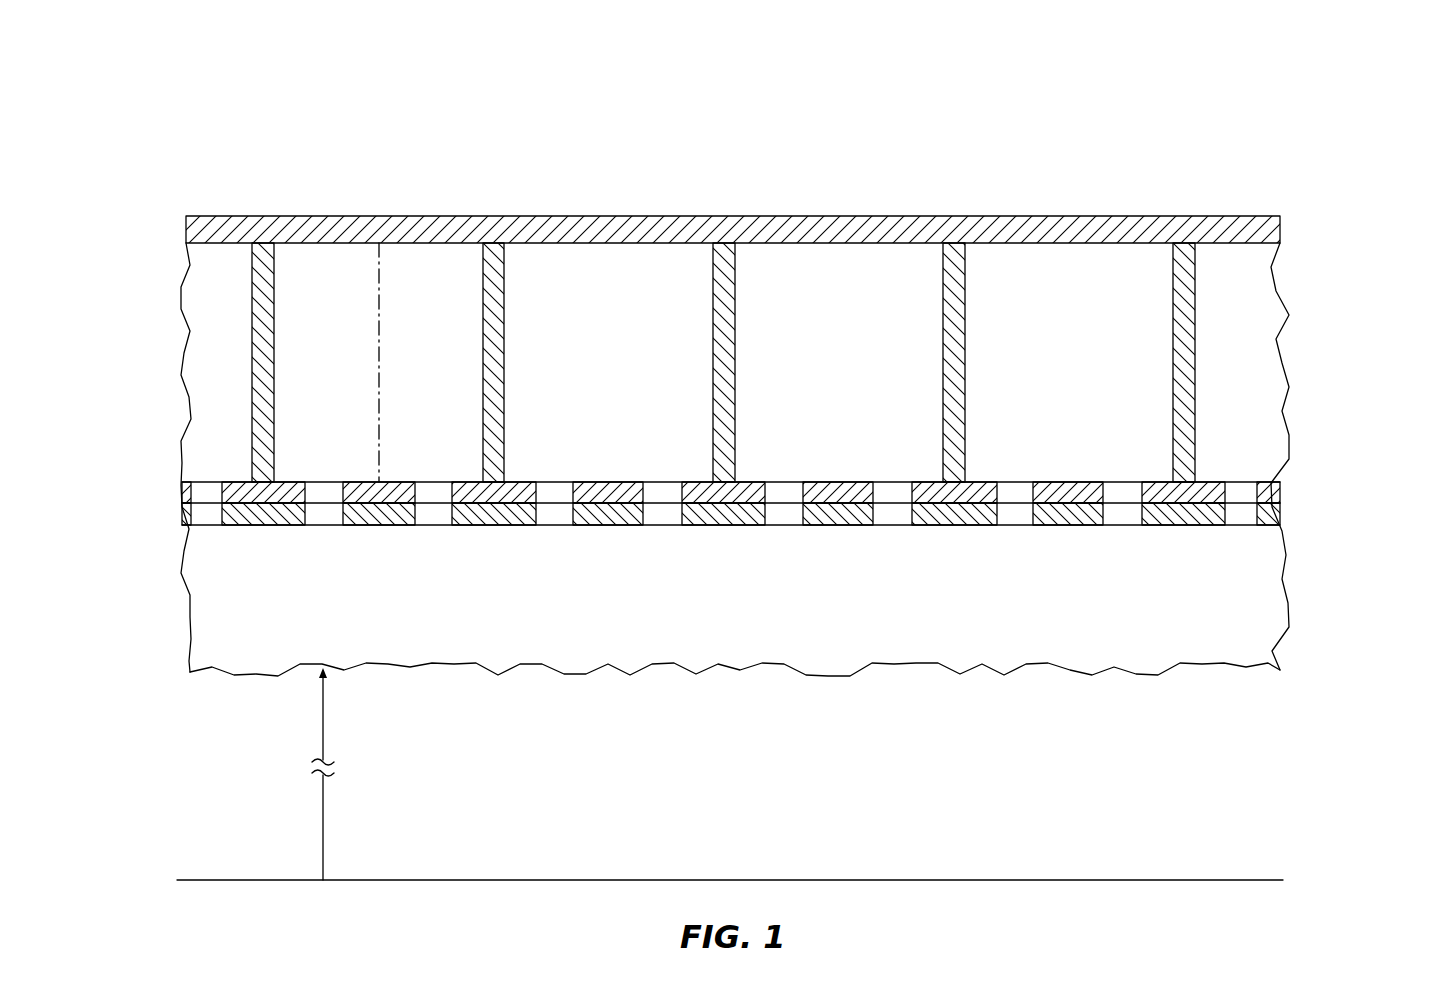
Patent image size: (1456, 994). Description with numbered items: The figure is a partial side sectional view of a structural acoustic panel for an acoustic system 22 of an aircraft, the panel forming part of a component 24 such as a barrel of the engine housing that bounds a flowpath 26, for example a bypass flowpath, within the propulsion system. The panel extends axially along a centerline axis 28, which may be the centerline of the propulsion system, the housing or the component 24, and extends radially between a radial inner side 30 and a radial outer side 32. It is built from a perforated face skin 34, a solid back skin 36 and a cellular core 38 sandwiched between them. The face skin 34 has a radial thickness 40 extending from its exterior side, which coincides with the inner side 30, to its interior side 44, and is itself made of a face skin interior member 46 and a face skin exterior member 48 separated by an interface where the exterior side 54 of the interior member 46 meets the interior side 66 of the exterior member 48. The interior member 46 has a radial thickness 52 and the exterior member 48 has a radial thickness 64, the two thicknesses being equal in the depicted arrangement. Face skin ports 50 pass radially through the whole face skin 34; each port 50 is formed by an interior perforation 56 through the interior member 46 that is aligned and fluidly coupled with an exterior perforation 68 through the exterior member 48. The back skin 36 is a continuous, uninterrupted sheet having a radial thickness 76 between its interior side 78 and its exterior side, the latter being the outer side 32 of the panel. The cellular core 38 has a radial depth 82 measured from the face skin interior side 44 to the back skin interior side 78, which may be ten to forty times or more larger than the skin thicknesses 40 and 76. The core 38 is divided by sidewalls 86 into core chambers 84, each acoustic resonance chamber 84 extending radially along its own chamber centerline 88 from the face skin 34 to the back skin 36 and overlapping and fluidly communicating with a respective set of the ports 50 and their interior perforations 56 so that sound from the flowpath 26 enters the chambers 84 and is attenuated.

The acoustic system 22 is at (158, 63).
The component 24 is at (158, 129).
The flowpath 26 is at (737, 631).
The centerline axis 28 is at (208, 880).
The radial inner side 30 is at (258, 526).
The radial outer side 32 is at (263, 216).
The perforated face skin 34 is at (152, 484).
The back skin 36 is at (170, 228).
The cellular core 38 is at (152, 245).
The face skin radial thickness 40 is at (1347, 455).
The face skin interior side 44 is at (235, 482).
The face skin interior member 46 is at (1072, 473).
The face skin exterior member 48 is at (1072, 534).
The face skin ports 50 is at (541, 532).
The interior member radial thickness 52 is at (1417, 525).
The interior member exterior side 54 is at (235, 527).
The interior perforations 56 is at (433, 490).
The exterior member radial thickness 64 is at (1403, 476).
The exterior member interior side 66 is at (283, 483).
The exterior perforations 68 is at (432, 520).
The back skin radial thickness 76 is at (1388, 243).
The back skin interior side 78 is at (288, 244).
The cellular core radial depth 82 is at (1373, 252).
The core chambers 84 is at (454, 376).
The corrugated sidewalls 86 is at (505, 378).
The chamber centerline 88 is at (381, 308).